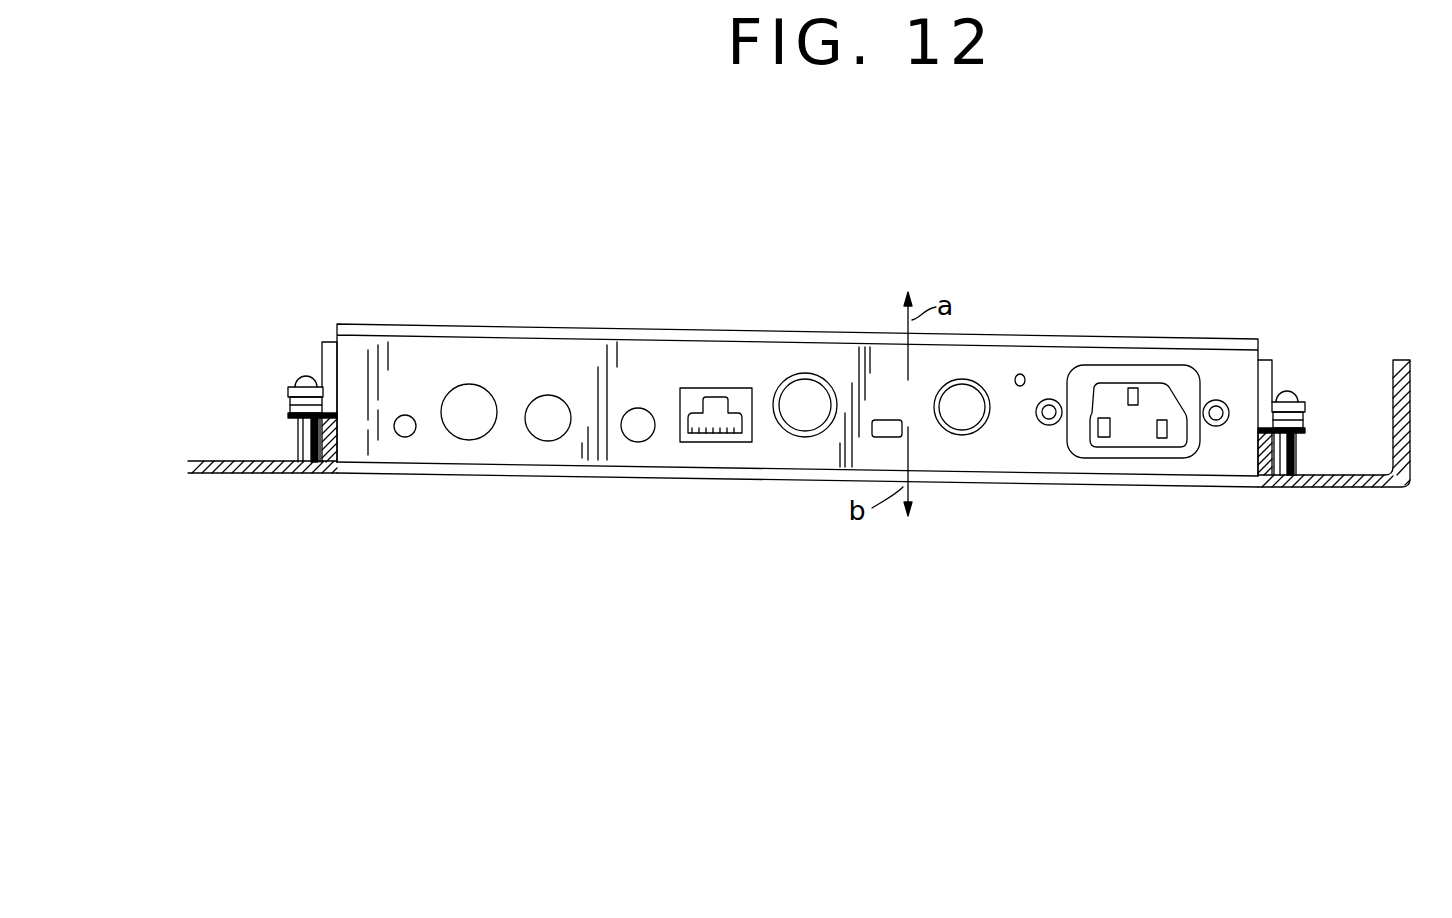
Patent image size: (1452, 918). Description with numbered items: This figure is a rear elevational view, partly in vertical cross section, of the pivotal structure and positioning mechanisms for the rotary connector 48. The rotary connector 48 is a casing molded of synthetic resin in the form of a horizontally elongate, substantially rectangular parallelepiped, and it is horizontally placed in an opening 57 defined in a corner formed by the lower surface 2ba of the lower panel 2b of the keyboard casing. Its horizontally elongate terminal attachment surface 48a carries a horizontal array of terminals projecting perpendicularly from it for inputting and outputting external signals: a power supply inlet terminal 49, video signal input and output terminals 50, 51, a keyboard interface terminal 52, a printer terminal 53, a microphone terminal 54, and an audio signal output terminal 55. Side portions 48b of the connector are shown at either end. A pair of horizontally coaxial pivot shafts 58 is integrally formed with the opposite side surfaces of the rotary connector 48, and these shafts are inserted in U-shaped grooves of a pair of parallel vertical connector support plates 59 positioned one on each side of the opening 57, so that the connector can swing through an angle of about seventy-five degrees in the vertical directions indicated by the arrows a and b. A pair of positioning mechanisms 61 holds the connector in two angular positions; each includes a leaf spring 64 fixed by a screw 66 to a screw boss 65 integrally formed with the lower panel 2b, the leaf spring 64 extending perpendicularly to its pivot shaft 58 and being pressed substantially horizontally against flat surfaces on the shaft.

The rotary connector 48 is at (736, 348).
The terminal attachment surface 48a is at (828, 355).
The mounting flange 48b is at (337, 367).
The power supply inlet terminal 49 is at (1128, 438).
The video signal input terminal 50 is at (967, 428).
The video signal output terminal 51 is at (807, 429).
The keyboard interface terminal 52 is at (715, 425).
The printer terminal 53 is at (637, 443).
The microphone terminal 54 is at (548, 442).
The audio signal output terminal 55 is at (469, 435).
The opening 57 is at (341, 471).
The pivot shaft 58 is at (291, 407).
The connector support plate 59 is at (336, 432).
The positioning mechanism 61 is at (268, 418).
The leaf spring 64 is at (294, 391).
The screw boss 65 is at (298, 438).
The screw 66 is at (307, 377).
The lower panel 2b is at (1383, 487).
The lower surface 2ba is at (1338, 490).